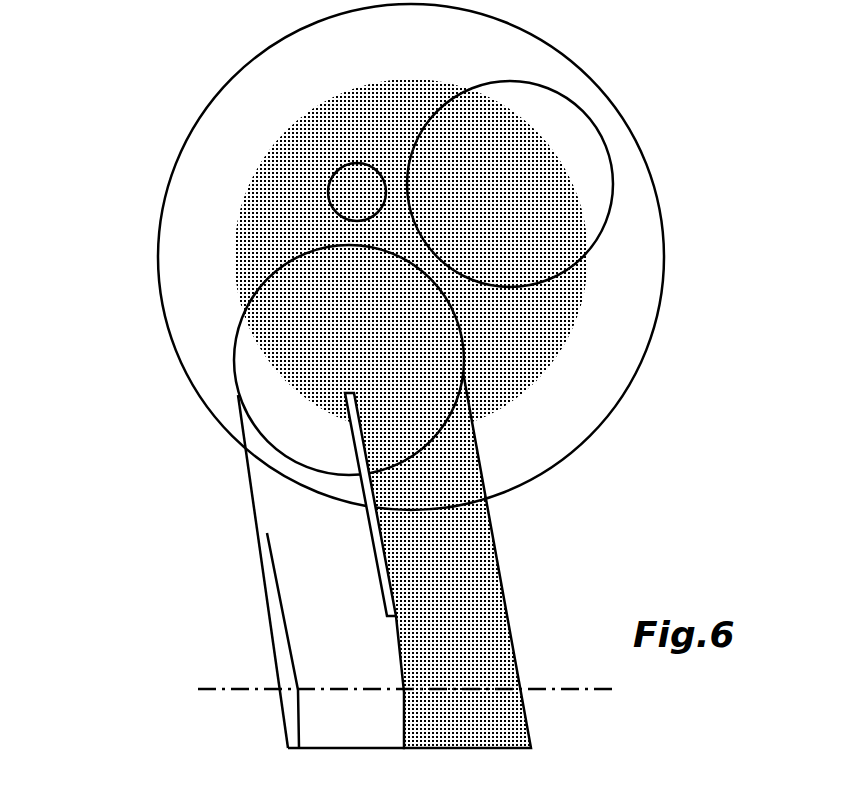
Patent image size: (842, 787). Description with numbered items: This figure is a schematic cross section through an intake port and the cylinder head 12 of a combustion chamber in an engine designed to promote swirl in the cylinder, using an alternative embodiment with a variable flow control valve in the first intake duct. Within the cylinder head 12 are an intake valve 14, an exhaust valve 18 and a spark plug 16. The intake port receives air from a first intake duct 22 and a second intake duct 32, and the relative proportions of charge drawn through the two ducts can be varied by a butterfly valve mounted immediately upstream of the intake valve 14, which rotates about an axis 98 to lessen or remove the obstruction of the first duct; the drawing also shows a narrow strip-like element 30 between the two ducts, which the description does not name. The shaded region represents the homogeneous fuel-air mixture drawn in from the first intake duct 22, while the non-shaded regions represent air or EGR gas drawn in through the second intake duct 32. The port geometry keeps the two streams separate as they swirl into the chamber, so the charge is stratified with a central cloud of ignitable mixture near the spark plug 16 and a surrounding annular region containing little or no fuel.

The cylinder head 12 is at (660, 290).
The intake valve 14 is at (280, 370).
The spark plug 16 is at (357, 190).
The exhaust valve 18 is at (552, 172).
The first intake duct 22 is at (460, 652).
The plate 30 is at (382, 558).
The second intake duct 32 is at (338, 653).
The axis 98 is at (245, 688).